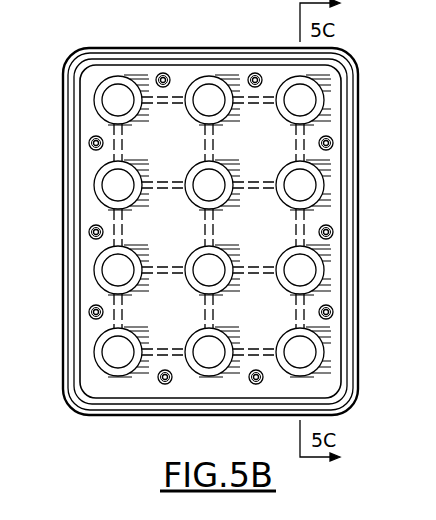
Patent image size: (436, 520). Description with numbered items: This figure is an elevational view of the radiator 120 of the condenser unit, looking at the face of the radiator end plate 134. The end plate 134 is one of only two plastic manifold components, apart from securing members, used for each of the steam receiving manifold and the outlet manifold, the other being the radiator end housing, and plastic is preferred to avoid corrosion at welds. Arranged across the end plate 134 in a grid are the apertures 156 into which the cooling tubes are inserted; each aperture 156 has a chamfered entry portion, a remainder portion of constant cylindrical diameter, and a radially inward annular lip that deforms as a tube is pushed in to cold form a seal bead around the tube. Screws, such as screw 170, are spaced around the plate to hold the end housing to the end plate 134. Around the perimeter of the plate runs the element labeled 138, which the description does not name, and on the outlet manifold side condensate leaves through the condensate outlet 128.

The radiator 120 is at (0, 108).
The condensate outlet 128 is at (6, 232).
The radiator end plate 134 is at (172, 42).
The seal 138 is at (92, 63).
The aperture 156 is at (120, 273).
The screw 170 is at (88, 229).